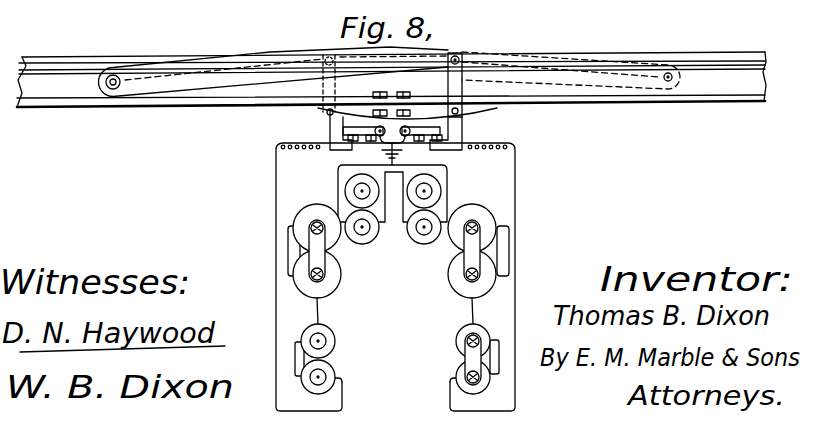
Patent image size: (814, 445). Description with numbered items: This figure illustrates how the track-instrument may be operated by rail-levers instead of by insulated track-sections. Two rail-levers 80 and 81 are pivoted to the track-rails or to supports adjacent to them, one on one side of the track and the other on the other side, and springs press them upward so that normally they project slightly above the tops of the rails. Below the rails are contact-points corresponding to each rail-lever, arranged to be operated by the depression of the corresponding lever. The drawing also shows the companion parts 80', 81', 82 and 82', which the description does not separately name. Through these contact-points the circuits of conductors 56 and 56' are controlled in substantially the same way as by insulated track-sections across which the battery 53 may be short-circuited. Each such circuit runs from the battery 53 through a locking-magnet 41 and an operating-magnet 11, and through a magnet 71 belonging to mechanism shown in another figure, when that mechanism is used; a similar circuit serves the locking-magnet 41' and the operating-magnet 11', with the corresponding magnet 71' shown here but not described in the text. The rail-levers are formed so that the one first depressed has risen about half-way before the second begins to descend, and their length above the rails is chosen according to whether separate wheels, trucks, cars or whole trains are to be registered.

The rail-lever 80 is at (571, 53).
The link 80' is at (274, 72).
The rail-lever 81 is at (364, 124).
The clamp bar 81' is at (421, 124).
The bracket 82 is at (339, 138).
The bracket 82' is at (450, 141).
The battery 53 is at (401, 150).
The conductor 56 is at (469, 277).
The conductor 56' is at (317, 277).
The locking-magnet 41 is at (440, 209).
The locking-magnet 41' is at (375, 205).
The operating-magnet 11 is at (470, 251).
The operating-magnet 11' is at (314, 241).
The magnet 71 is at (468, 346).
The roller 71' is at (333, 346).